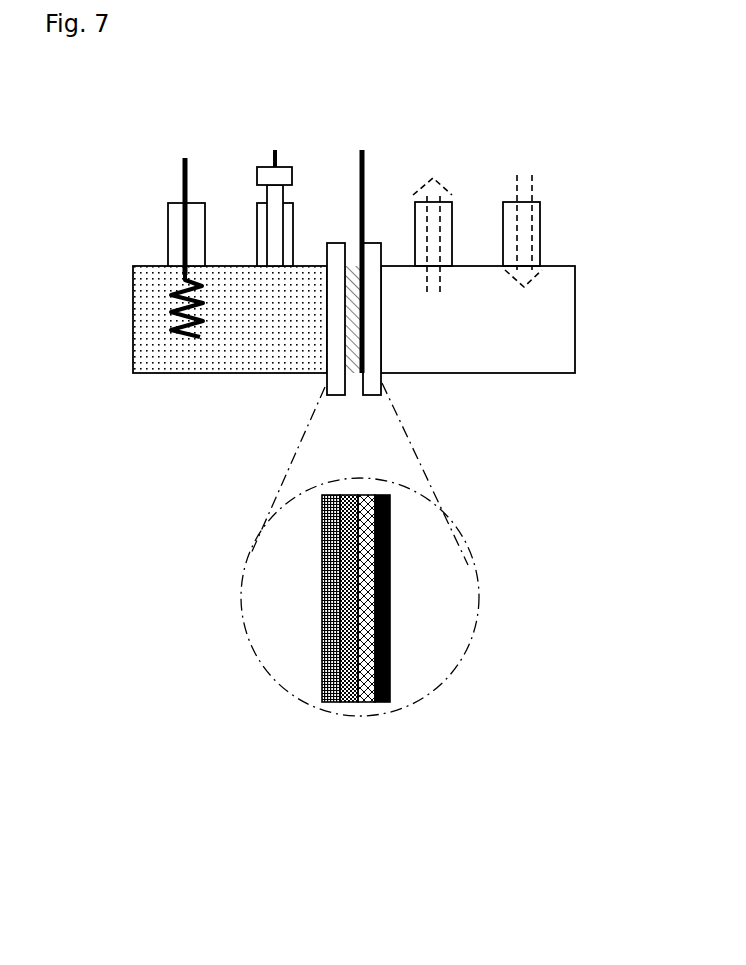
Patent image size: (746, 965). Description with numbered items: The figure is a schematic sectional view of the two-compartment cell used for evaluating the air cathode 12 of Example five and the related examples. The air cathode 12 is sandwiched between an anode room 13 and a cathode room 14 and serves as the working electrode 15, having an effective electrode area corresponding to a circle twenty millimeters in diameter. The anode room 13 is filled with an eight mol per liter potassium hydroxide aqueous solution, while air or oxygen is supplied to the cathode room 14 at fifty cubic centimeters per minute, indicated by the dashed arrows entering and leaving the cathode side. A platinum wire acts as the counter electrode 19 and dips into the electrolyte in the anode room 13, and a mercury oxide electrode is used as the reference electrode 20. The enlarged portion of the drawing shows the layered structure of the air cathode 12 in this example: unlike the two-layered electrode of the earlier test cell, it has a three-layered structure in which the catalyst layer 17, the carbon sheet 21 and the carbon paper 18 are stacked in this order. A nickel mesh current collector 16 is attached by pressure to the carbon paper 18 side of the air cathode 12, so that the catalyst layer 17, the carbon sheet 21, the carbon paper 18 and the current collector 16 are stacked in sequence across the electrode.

The air cathode 12 is at (353, 358).
The anode room 13 is at (252, 355).
The cathode room 14 is at (518, 352).
The working electrode 15 is at (362, 150).
The current collector 16 is at (390, 695).
The catalyst layer 17 is at (323, 688).
The carbon paper 18 is at (368, 702).
The counter electrode 19 is at (188, 158).
The reference electrode 20 is at (275, 150).
The carbon sheet 21 is at (350, 700).